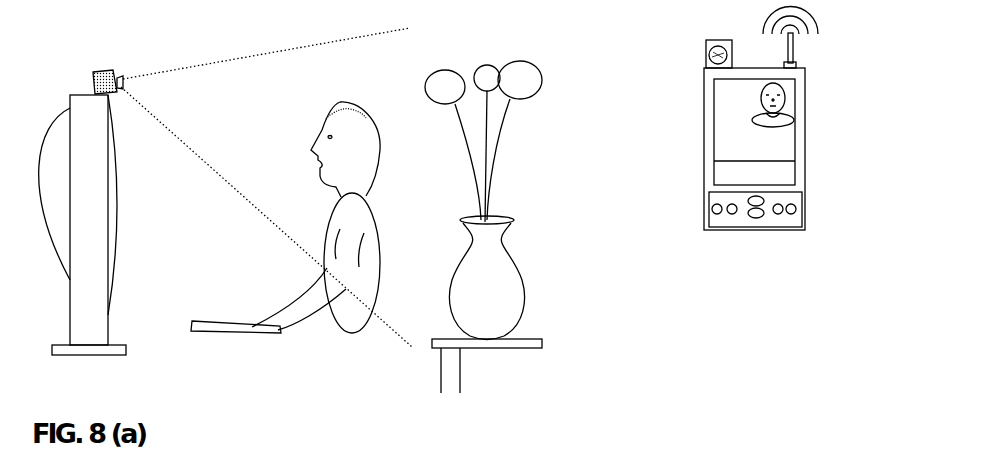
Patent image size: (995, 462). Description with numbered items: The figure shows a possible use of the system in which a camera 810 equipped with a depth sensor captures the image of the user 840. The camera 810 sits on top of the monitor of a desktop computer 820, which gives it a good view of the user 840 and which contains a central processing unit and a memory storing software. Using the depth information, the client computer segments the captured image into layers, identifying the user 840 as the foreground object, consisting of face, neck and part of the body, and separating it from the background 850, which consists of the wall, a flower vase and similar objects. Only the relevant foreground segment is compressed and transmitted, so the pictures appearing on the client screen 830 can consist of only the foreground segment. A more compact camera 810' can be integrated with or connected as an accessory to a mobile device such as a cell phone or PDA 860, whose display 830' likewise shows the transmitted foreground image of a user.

The camera 810 is at (252, 187).
The desktop computer 820 is at (89, 225).
The client screen 830 is at (95, 205).
The user 840 is at (320, 160).
The background 850 is at (483, 209).
The mobile client device camera 810' is at (762, 38).
The mobile device 860 is at (746, 164).
The mobile client device display image 830' is at (701, 139).